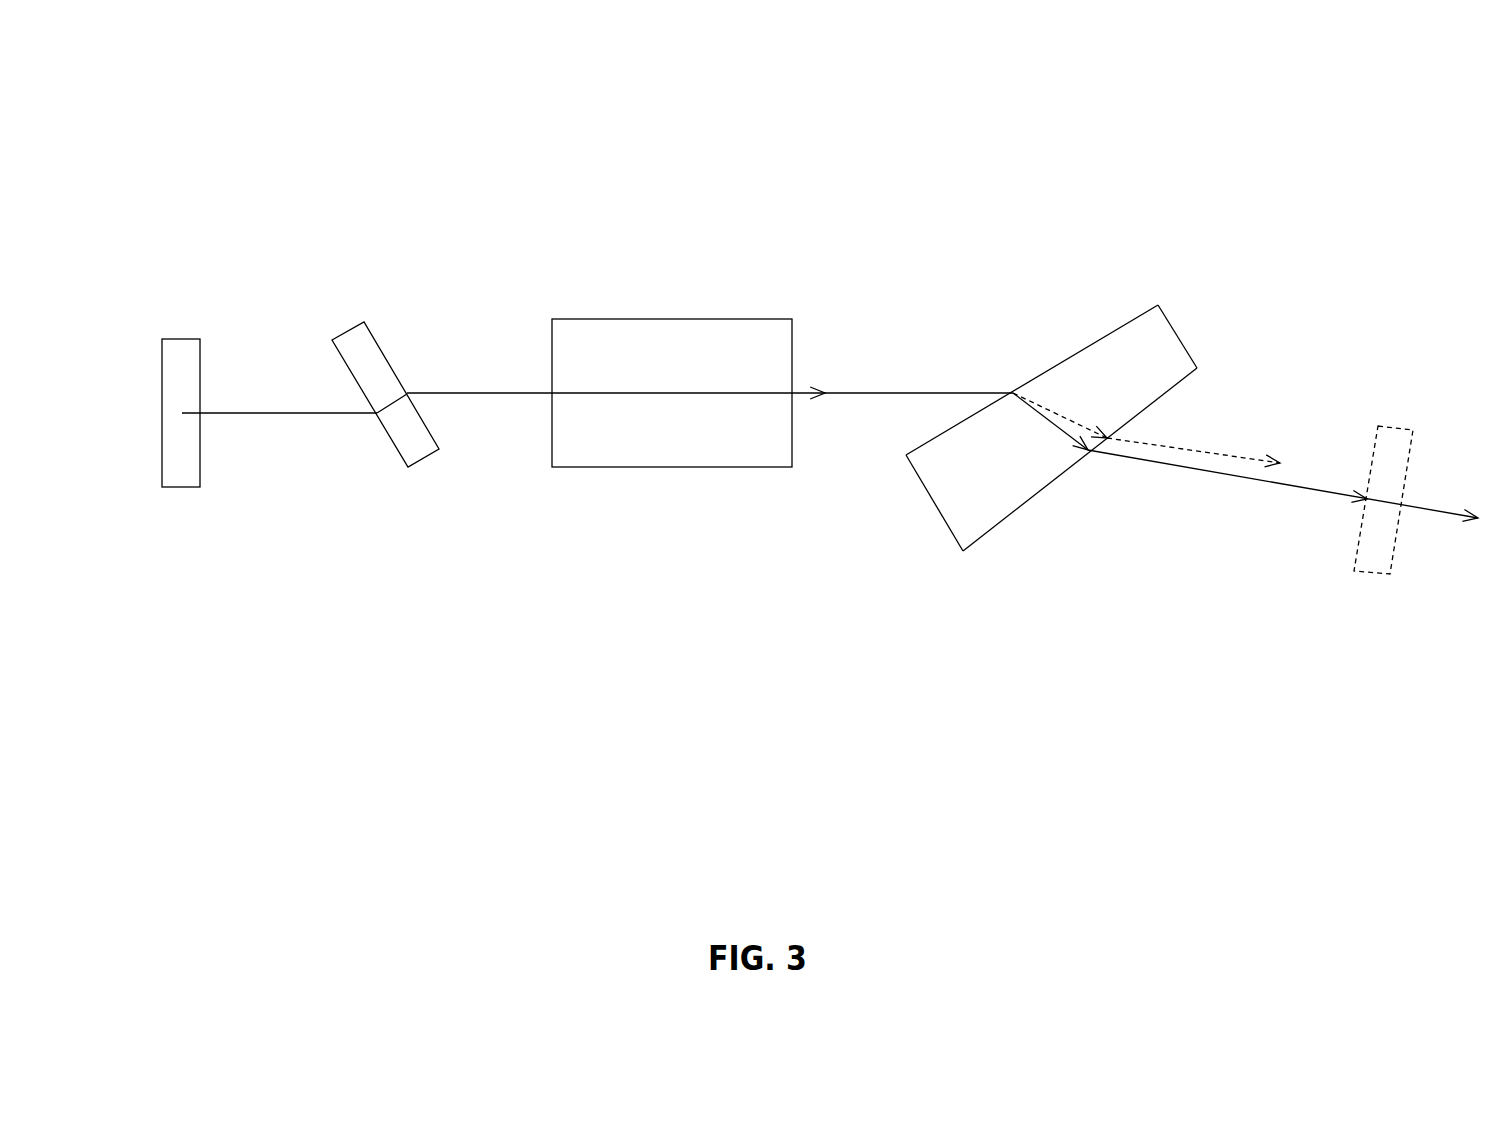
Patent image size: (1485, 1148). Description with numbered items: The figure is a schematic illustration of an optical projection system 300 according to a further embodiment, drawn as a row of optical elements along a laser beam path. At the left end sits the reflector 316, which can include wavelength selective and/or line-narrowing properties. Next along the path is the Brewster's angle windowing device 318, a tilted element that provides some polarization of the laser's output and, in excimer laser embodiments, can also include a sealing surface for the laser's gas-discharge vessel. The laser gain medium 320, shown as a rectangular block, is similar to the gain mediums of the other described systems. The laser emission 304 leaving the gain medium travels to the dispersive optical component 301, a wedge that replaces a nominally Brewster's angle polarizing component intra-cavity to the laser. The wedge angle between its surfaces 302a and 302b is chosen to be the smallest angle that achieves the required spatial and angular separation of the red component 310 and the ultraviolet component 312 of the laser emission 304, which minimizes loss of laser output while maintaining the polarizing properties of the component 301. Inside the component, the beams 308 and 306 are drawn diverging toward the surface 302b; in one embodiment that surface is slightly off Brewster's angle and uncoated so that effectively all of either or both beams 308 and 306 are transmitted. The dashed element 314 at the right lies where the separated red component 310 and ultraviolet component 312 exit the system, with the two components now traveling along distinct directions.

The system 300 is at (820, 320).
The dispersive optical component 301 is at (1051, 428).
The surface 302a is at (1032, 379).
The surface 302b is at (1080, 462).
The laser emission 304 is at (909, 360).
The beam 306 is at (1079, 400).
The beam 308 is at (1046, 438).
The red component 310 is at (1209, 433).
The ultraviolet component 312 is at (1283, 491).
The output element 314 is at (1357, 467).
The reflector 316 is at (207, 440).
The Brewster's angle windowing device 318 is at (414, 419).
The laser gain medium 320 is at (672, 358).